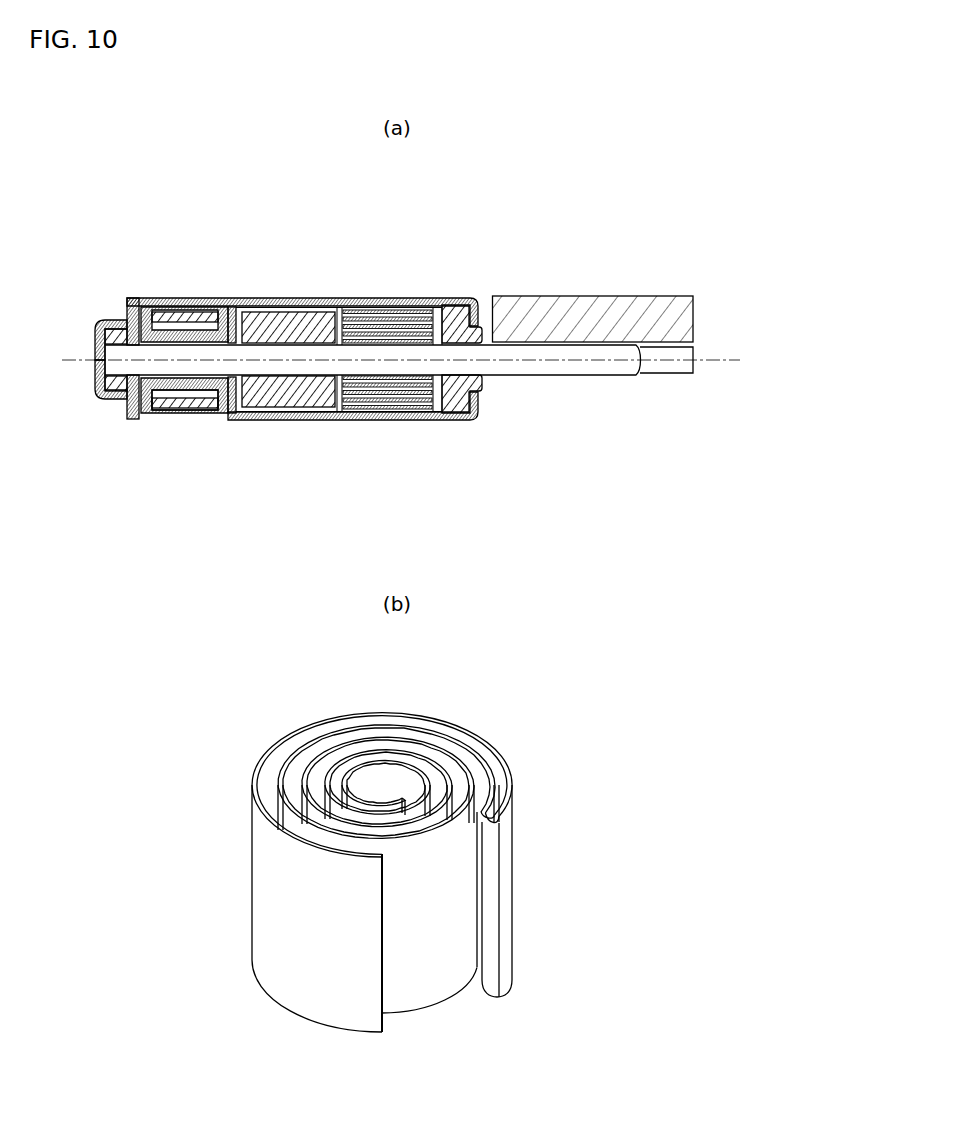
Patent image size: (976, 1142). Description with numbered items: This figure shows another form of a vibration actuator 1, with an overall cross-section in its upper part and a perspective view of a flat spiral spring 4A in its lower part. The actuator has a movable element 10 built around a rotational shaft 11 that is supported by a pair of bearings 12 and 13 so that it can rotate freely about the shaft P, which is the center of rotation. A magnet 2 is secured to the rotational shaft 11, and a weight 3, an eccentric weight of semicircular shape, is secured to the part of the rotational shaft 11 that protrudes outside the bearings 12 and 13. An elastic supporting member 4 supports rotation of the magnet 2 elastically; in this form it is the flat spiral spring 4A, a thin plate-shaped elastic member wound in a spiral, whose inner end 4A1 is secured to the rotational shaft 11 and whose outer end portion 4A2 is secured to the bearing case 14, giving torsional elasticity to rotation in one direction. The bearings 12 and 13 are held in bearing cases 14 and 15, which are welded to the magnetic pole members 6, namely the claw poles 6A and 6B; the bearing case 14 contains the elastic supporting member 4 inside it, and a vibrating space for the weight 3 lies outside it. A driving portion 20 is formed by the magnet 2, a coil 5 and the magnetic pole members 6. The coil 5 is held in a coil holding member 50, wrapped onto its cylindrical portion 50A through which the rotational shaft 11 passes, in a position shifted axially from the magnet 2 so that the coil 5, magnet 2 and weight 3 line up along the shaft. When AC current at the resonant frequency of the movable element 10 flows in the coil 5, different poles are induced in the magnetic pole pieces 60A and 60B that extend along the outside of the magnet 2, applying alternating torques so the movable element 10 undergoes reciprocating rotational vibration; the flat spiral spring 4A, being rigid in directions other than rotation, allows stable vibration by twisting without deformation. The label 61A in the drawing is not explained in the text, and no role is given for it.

The vibration actuator 1 is at (633, 210).
The magnet 2 is at (313, 410).
The weight 3 is at (643, 296).
The elastic supporting member 4 is at (521, 686).
The flat spiral spring 4A is at (396, 412).
The inner end 4A1 is at (397, 800).
The outer end portion 4A2 is at (302, 1012).
The coil 5 is at (185, 410).
The magnetic pole members 6 is at (170, 364).
The claw pole 6A is at (232, 420).
The claw pole 6B is at (136, 298).
The movable element 10 is at (399, 367).
The rotational shaft 11 is at (578, 376).
The bearing 12 is at (453, 420).
The bearing 13 is at (100, 320).
The bearing case 14 is at (440, 298).
The bearing case 15 is at (92, 396).
The driving portion 20 is at (268, 364).
The coil holding member 50 is at (226, 300).
The cylindrical portion 50A is at (167, 411).
The magnetic pole piece 60A is at (268, 420).
The magnetic pole piece 60B is at (253, 298).
The coil winding 61A is at (187, 317).
The shaft P is at (714, 363).